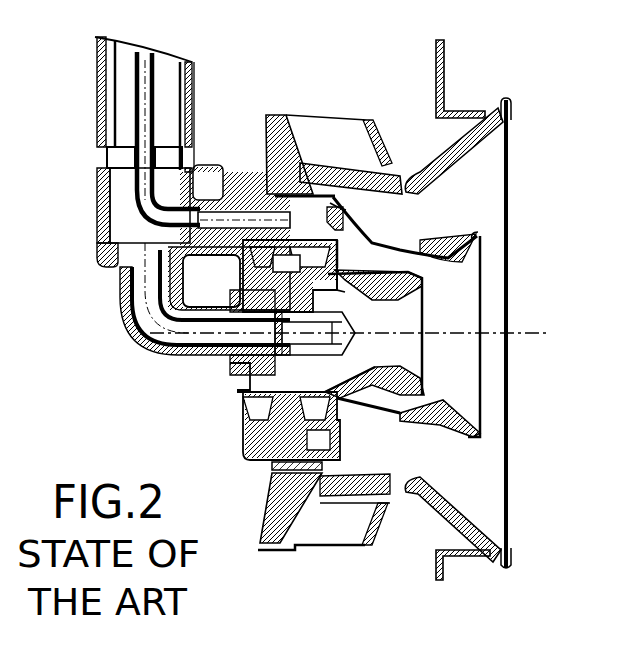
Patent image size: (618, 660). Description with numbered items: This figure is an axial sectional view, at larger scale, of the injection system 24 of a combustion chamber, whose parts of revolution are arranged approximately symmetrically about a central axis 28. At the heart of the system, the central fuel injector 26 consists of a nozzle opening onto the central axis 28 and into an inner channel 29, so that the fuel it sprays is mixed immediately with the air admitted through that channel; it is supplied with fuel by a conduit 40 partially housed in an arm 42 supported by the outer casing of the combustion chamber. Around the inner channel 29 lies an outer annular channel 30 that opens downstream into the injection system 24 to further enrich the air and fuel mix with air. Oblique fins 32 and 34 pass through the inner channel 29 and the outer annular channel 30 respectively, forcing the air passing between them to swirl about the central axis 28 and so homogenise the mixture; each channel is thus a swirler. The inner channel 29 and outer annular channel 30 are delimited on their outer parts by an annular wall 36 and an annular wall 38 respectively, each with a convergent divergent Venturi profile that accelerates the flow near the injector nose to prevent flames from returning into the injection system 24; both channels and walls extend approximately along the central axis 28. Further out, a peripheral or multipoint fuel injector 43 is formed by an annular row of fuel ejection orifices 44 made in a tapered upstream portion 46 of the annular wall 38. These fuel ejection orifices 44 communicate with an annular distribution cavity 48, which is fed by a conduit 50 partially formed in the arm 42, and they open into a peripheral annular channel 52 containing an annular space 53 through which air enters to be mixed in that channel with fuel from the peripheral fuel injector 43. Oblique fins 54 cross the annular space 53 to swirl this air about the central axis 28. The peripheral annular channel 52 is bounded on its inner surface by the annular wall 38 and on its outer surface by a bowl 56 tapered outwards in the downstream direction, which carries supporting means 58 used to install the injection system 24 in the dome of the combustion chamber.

The injection system 24 is at (541, 68).
The central fuel injector 26 is at (335, 330).
The central axis 28 is at (515, 338).
The inner channel 29 is at (320, 300).
The outer annular channel 30 is at (388, 264).
The oblique fins 32 is at (280, 265).
The oblique fins 34 is at (268, 258).
The annular wall 36 is at (405, 286).
The annular wall 38 is at (458, 246).
The conduit 40 is at (205, 337).
The arm 42 is at (102, 217).
The peripheral fuel injector 43 is at (336, 193).
The fuel ejection orifices 44 is at (337, 205).
The tapered upstream portion 46 is at (338, 226).
The annular distribution cavity 48 is at (322, 440).
The conduit 50 is at (215, 220).
The peripheral annular channel 52 is at (418, 231).
The annular space 53 is at (306, 150).
The oblique fins 54 is at (341, 172).
The bowl 56 is at (457, 163).
The supporting means 58 is at (447, 76).